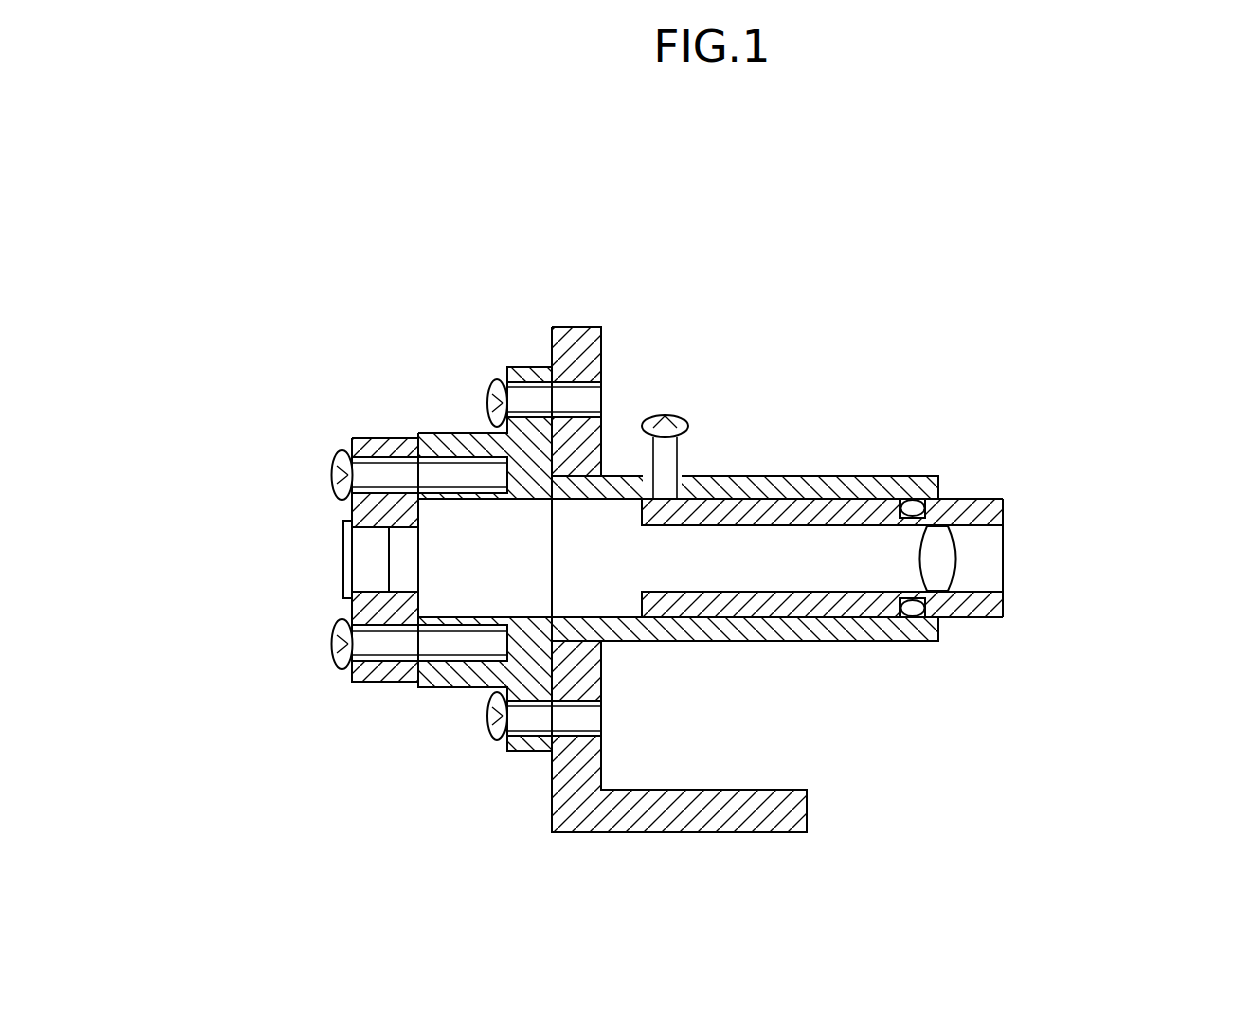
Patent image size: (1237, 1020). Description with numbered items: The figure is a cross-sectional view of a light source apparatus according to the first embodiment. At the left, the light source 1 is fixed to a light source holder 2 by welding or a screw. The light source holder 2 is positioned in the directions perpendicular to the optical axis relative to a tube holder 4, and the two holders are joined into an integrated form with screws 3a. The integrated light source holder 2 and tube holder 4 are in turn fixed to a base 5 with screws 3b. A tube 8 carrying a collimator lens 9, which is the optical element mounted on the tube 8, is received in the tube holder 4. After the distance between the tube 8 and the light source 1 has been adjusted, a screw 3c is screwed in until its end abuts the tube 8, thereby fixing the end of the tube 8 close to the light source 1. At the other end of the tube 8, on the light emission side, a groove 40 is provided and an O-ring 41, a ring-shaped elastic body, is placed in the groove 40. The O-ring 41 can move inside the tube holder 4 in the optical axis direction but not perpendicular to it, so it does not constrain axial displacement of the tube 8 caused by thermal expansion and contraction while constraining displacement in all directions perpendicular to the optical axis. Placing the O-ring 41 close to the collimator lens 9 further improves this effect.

The light source 1 is at (345, 554).
The light source holder 2 is at (355, 682).
The screws 3a is at (333, 483).
The screws 3b is at (489, 393).
The screw 3c is at (665, 415).
The tube holder 4 is at (509, 366).
The base 5 is at (808, 790).
The tube 8 is at (987, 500).
The collimator lens 9 is at (953, 547).
The groove 40 is at (898, 500).
The O-ring 41 is at (927, 500).